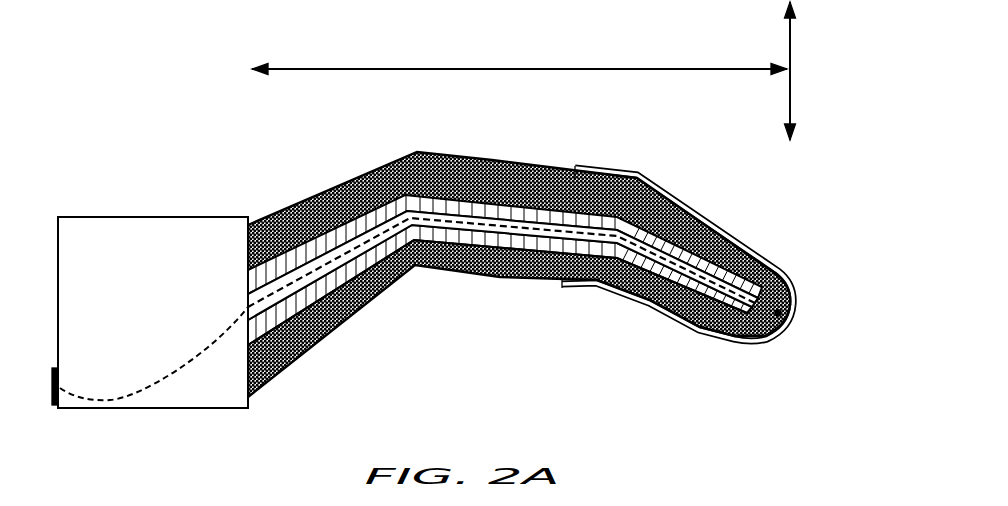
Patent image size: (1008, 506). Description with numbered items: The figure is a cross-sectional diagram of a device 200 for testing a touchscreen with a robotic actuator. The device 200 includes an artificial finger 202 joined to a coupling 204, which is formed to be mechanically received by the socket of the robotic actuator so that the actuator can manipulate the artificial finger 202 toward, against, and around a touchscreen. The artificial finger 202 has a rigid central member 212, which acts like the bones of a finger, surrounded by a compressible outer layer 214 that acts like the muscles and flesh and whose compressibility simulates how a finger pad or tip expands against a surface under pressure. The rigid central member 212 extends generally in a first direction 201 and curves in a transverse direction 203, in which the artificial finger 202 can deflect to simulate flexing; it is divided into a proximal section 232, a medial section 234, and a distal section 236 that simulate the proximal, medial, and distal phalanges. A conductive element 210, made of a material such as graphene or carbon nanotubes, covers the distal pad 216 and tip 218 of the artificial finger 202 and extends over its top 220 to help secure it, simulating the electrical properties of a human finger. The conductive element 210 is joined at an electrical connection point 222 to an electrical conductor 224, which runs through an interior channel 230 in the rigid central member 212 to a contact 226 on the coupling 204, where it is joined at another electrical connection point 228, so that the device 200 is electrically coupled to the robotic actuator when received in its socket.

The device 200 is at (155, 138).
The first direction 201 is at (325, 69).
The artificial finger 202 is at (548, 244).
The transverse direction 203 is at (791, 55).
The coupling 204 is at (150, 217).
The conductive element 210 is at (658, 312).
The rigid central member 212 is at (413, 205).
The compressible outer layer 214 is at (503, 185).
The distal pad 216 is at (672, 328).
The tip 218 is at (792, 297).
The top 220 is at (710, 224).
The electrical connection point 222 is at (778, 313).
The electrical conductor 224 is at (340, 298).
The contact 226 is at (58, 396).
The electrical connection point 228 is at (60, 390).
The interior channel 230 is at (347, 247).
The proximal section 232 is at (297, 287).
The medial section 234 is at (558, 252).
The distal section 236 is at (618, 262).